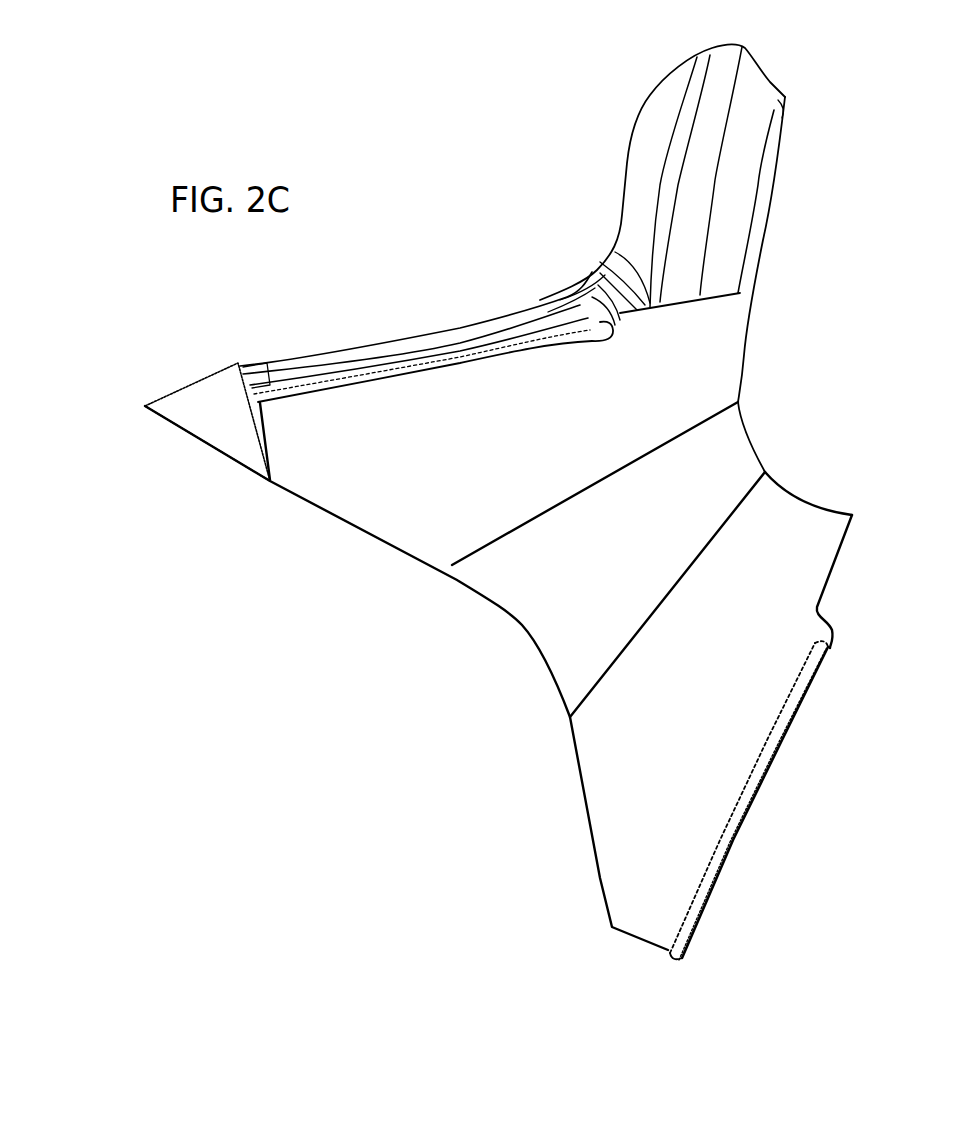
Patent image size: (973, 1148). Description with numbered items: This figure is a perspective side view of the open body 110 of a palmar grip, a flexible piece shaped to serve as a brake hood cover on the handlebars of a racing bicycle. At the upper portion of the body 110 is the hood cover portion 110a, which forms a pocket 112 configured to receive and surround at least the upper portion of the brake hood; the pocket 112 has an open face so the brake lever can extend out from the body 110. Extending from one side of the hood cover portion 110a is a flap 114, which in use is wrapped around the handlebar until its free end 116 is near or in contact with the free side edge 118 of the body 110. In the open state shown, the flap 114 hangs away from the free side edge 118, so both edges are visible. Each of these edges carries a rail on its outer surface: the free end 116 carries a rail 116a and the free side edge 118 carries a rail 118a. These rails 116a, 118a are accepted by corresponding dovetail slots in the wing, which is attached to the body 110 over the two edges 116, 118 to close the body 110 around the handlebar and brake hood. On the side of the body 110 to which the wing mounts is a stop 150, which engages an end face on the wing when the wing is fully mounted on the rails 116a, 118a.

The body 110 is at (523, 502).
The hood cover portion 110a is at (705, 258).
The pocket 112 is at (770, 132).
The flap 114 is at (560, 697).
The free end 116 is at (783, 800).
The rail 116a is at (820, 672).
The free side edge 118 is at (426, 337).
The rail 118a is at (455, 353).
The stop 150 is at (223, 426).